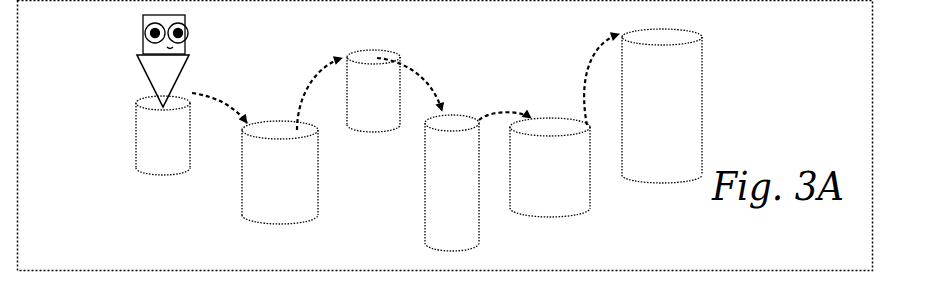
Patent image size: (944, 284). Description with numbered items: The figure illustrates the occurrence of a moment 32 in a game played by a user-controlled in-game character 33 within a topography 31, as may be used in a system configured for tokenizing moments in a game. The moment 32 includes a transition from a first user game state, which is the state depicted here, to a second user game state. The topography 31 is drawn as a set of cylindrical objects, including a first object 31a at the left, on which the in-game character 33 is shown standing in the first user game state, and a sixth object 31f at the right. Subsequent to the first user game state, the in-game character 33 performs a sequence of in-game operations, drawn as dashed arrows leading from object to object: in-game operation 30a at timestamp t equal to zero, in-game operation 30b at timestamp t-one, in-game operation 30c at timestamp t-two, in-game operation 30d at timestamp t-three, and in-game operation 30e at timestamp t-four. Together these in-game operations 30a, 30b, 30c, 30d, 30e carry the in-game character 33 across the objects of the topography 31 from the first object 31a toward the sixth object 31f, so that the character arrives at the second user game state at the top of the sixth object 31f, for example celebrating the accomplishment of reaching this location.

The in-game operation 30a is at (193, 93).
The in-game operation 30b is at (355, 45).
The in-game operation 30c is at (460, 65).
The in-game operation 30d is at (503, 93).
The in-game operation 30e is at (638, 25).
The topography 31 is at (388, 216).
The first object 31a is at (181, 166).
The sixth object 31f is at (680, 170).
The moment 32 is at (156, 205).
The in-game character 33 is at (158, 82).